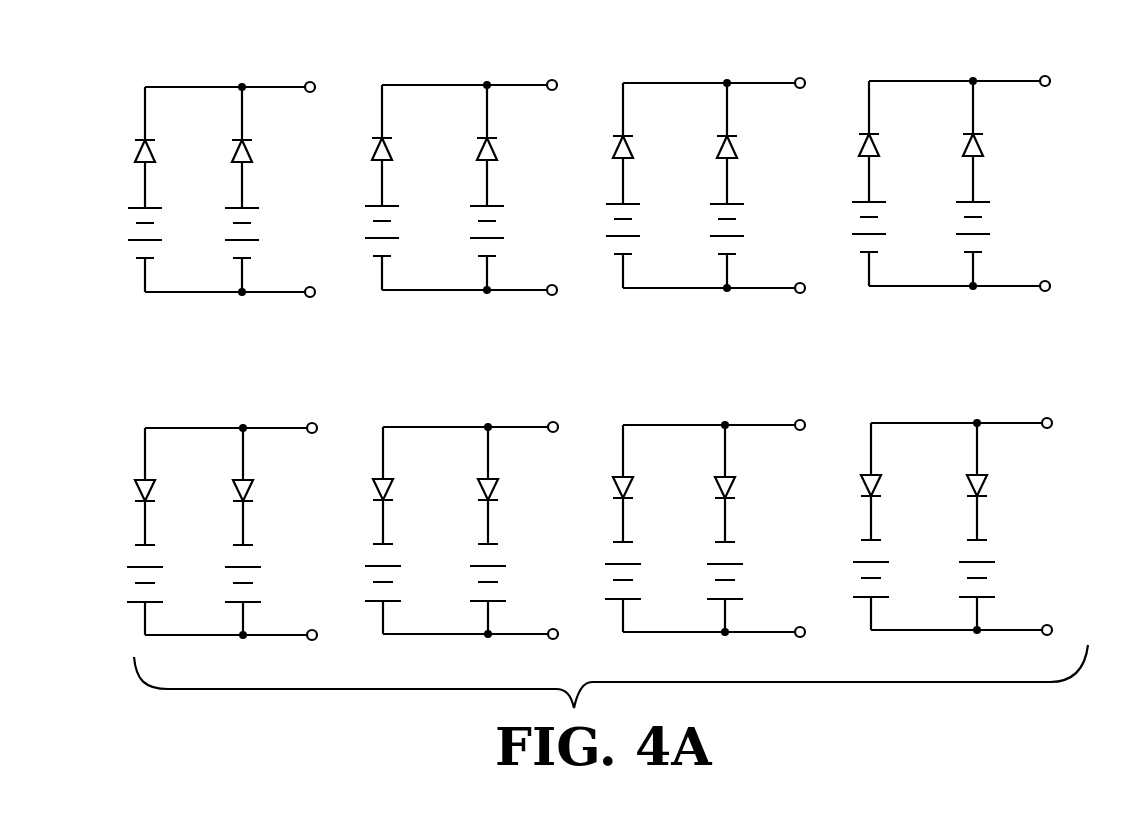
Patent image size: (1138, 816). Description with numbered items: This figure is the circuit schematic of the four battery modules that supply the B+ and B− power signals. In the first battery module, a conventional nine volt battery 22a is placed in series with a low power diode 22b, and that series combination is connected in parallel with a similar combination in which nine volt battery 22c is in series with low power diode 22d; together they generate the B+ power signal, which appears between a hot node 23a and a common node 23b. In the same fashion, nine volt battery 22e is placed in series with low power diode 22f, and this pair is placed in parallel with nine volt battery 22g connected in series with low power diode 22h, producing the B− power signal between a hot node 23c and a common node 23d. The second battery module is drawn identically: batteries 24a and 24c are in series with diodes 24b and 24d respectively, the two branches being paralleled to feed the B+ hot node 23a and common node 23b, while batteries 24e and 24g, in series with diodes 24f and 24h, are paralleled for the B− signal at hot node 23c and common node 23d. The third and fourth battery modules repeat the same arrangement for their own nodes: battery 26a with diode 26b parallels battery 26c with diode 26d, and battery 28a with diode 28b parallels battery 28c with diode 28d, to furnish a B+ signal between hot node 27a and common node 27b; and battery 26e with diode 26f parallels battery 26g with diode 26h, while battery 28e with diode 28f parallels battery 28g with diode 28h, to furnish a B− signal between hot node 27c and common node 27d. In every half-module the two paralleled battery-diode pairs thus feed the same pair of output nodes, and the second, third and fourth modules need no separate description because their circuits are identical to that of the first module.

The 9 volt battery 22a is at (150, 206).
The low power diode 22b is at (153, 150).
The 9 volt battery 22c is at (250, 206).
The low power diode 22d is at (250, 150).
The 9 volt battery 22e is at (150, 543).
The low power diode 22f is at (153, 488).
The 9 volt battery 22g is at (249, 543).
The low power diode 22h is at (253, 486).
The 9 volt battery 24a is at (387, 204).
The low power diode 24b is at (390, 148).
The 9 volt battery 24c is at (495, 204).
The low power diode 24d is at (495, 148).
The 9 volt battery 24e is at (388, 542).
The low power diode 24f is at (391, 487).
The 9 volt battery 24g is at (494, 542).
The low power diode 24h is at (498, 485).
The 9 volt battery 26a is at (628, 202).
The low power diode 26b is at (631, 146).
The 9 volt battery 26c is at (735, 202).
The low power diode 26d is at (735, 146).
The 9 volt battery 26e is at (628, 540).
The low power diode 26f is at (631, 485).
The 9 volt battery 26g is at (731, 540).
The low power diode 26h is at (735, 483).
The 9 volt battery 28a is at (874, 200).
The low power diode 28b is at (877, 144).
The 9 volt battery 28c is at (981, 200).
The low power diode 28d is at (981, 144).
The 9 volt battery 28e is at (876, 538).
The low power diode 28f is at (879, 483).
The 9 volt battery 28g is at (983, 538).
The low power diode 28h is at (987, 481).
The hot node 23a is at (312, 82).
The common node 23b is at (314, 296).
The hot node 23c is at (315, 423).
The common node 23d is at (317, 638).
The hot node 27a is at (802, 78).
The common node 27b is at (804, 292).
The hot node 27c is at (803, 420).
The common node 27d is at (805, 635).